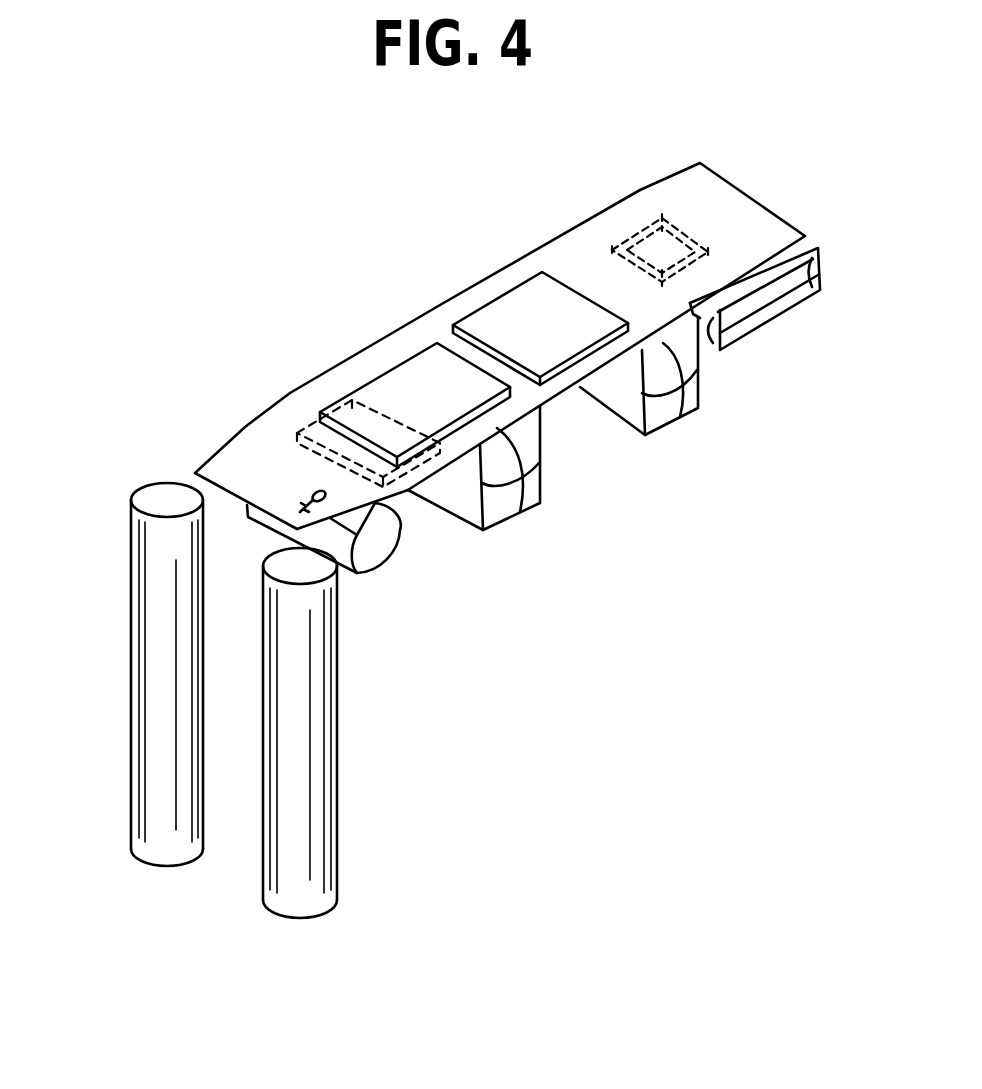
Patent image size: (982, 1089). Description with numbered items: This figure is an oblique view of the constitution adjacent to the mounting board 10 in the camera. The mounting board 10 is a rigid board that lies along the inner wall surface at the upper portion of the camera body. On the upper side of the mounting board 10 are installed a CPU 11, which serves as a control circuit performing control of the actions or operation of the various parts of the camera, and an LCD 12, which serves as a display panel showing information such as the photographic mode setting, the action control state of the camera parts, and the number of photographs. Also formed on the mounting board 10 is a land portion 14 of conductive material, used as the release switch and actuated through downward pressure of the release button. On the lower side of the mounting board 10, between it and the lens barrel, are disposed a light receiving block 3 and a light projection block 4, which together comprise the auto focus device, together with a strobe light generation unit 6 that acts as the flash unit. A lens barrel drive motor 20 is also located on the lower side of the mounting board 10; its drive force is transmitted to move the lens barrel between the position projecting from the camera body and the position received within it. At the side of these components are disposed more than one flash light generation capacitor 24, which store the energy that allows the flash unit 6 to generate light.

The mounting board 10 is at (723, 197).
The CPU 11 is at (515, 293).
The LCD 12 is at (410, 368).
The land portion 14 is at (303, 496).
The light receiving block 3 is at (535, 495).
The light projection block 4 is at (698, 403).
The flash unit 6 is at (820, 257).
The lens barrel drive motor 20 is at (385, 552).
The capacitor 24 is at (153, 655).